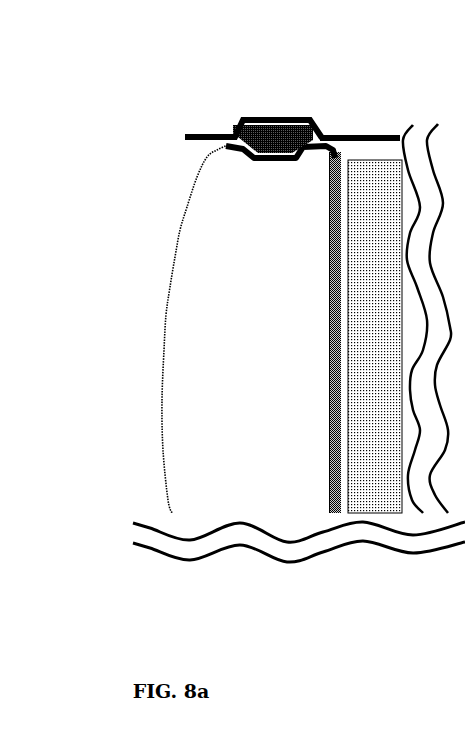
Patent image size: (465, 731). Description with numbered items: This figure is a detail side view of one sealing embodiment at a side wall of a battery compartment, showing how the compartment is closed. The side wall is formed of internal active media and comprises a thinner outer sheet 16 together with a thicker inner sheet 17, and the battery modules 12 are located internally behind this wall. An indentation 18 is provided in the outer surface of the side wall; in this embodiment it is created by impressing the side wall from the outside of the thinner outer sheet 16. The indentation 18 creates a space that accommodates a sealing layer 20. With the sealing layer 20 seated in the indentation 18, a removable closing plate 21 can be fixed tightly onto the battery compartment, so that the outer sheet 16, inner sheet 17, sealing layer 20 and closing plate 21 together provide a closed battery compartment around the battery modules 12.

The battery module 12 is at (378, 502).
The thinner outer sheet 16 is at (175, 258).
The thicker inner sheet 17 is at (330, 325).
The indentation 18 is at (270, 160).
The sealing layer 20 is at (238, 127).
The removable closing plate 21 is at (345, 137).